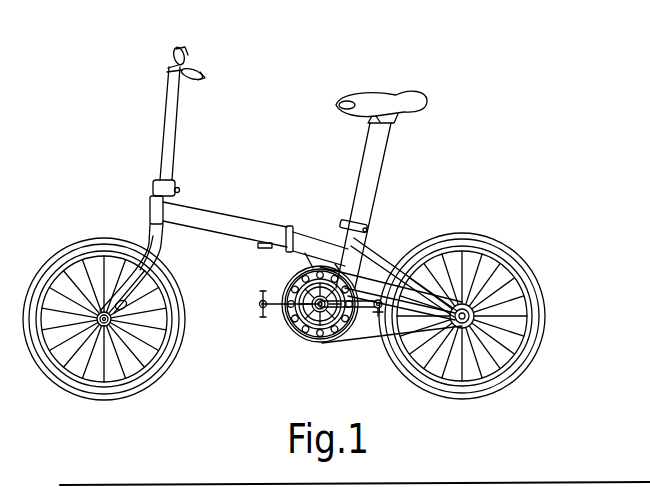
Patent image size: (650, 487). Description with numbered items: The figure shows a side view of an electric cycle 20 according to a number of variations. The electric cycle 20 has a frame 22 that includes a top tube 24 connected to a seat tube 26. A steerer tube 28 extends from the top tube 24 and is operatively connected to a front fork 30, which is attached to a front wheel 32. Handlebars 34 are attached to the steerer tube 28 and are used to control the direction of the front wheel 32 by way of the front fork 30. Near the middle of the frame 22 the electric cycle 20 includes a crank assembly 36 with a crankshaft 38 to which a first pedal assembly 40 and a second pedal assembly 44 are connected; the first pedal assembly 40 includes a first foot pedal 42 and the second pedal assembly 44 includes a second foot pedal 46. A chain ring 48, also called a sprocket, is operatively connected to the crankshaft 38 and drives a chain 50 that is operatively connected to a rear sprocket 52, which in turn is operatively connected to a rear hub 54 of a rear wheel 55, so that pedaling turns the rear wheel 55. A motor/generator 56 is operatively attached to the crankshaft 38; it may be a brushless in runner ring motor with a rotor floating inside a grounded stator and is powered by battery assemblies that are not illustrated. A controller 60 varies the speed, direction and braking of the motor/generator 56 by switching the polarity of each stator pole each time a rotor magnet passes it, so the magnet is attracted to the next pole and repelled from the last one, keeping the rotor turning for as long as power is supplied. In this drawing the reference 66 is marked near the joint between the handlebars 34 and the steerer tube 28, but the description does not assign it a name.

The electric cycle 20 is at (455, 52).
The frame 22 is at (198, 220).
The top tube 24 is at (254, 228).
The seat tube 26 is at (367, 172).
The steerer tube 28 is at (168, 133).
The front fork 30 is at (148, 255).
The front wheel 32 is at (58, 272).
The handlebars 34 is at (175, 50).
The crank assembly 36 is at (322, 320).
The crankshaft 38 is at (313, 310).
The first pedal assembly 40 is at (272, 308).
The first foot pedal 42 is at (262, 299).
The second pedal assembly 44 is at (348, 306).
The second foot pedal 46 is at (386, 256).
The chain ring 48 is at (302, 318).
The chain 50 is at (378, 272).
The rear sprocket 52 is at (522, 272).
The rear hub 54 is at (500, 361).
The rear wheel 55 is at (540, 307).
The motor/generator 56 is at (314, 343).
The controller 60 is at (316, 266).
The handlebar folding joint 66 is at (167, 69).